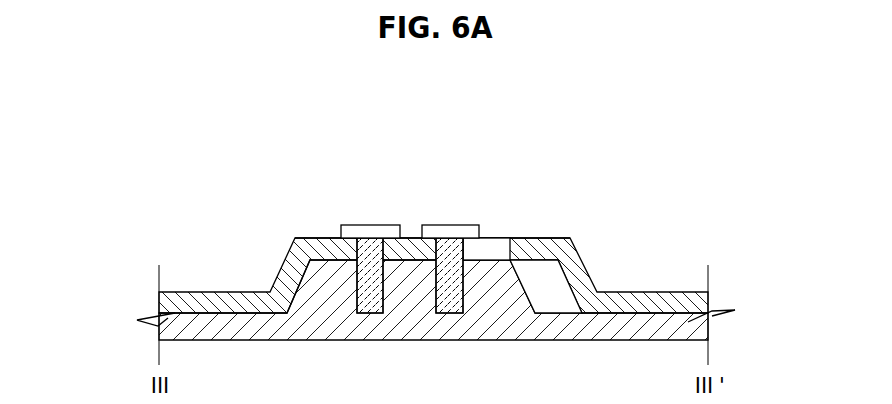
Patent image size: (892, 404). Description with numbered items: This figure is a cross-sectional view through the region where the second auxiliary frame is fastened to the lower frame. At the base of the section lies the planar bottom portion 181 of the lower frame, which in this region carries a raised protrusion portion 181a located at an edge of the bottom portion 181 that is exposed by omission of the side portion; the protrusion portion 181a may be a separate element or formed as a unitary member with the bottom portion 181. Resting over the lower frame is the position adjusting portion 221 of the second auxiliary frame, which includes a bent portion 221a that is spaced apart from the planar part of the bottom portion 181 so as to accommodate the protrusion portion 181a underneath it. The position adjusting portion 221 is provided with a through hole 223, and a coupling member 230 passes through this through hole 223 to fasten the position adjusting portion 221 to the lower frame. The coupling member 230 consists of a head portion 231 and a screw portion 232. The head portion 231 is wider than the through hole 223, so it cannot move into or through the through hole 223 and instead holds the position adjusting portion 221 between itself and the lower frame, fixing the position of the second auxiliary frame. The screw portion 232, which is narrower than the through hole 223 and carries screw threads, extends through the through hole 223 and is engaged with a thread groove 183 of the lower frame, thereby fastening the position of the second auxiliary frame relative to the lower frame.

The bottom portion 181 is at (410, 327).
The protrusion portion 181a is at (490, 287).
The thread groove 183 is at (357, 292).
The position adjusting portion 221 is at (225, 300).
The bent portion 221a is at (310, 247).
The through hole 223 is at (486, 250).
The coupling member 230 is at (403, 252).
The head portion 231 is at (365, 232).
The screw portion 232 is at (390, 245).